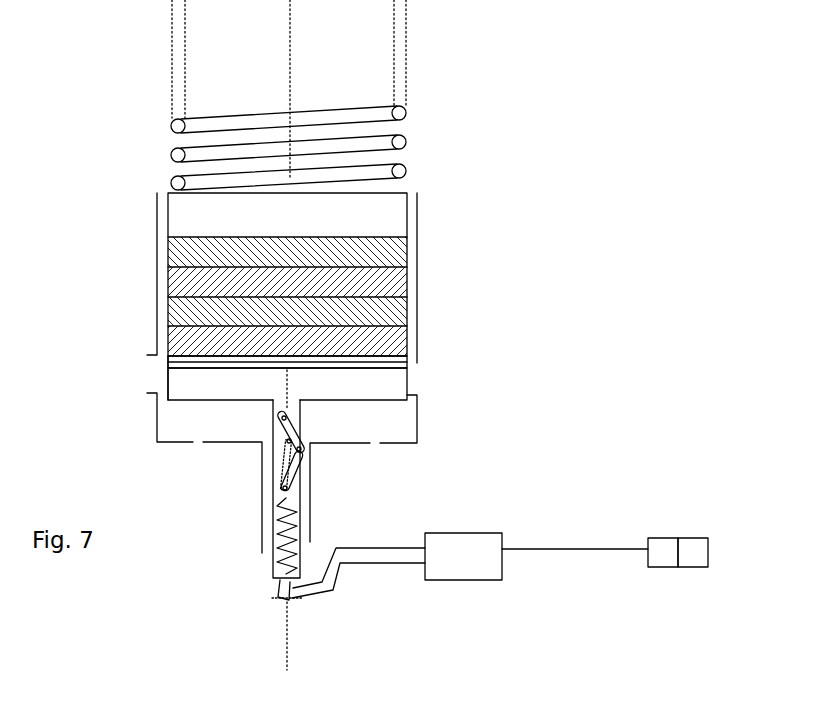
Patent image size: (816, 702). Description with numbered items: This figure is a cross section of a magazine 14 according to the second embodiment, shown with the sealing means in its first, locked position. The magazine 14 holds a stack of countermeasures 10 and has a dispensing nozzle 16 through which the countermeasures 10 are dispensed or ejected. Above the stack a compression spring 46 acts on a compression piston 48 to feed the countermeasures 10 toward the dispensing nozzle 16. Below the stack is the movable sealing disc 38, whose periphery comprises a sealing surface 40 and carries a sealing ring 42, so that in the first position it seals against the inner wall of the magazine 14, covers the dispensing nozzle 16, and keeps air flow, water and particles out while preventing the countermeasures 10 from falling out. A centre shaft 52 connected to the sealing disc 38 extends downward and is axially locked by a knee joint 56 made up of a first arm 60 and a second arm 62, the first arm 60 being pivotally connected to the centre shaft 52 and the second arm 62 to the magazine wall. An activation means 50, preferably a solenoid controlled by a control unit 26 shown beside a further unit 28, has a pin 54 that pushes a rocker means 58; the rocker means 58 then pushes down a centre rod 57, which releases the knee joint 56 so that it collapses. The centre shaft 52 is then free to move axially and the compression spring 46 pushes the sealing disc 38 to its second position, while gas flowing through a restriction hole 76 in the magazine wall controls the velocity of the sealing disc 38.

The countermeasures 10 is at (408, 252).
The magazine 14 is at (487, 181).
The dispensing nozzle 16 is at (147, 394).
The control unit 26 is at (655, 538).
The memory unit 28 is at (688, 538).
The sealing means 38 is at (408, 384).
The sealing surface 40 is at (167, 373).
The sealing ring 42 is at (408, 364).
The compression spring 46 is at (407, 138).
The compression piston 48 is at (418, 208).
The activation means 50 is at (462, 533).
The centre shaft 52 is at (272, 420).
The pin 54 is at (390, 565).
The knee joint 56 is at (322, 453).
The centre rod 57 is at (287, 504).
The rocker means 58 is at (331, 597).
The first arm 60 is at (303, 420).
The second arm 62 is at (307, 482).
The restriction hole 76 is at (380, 445).